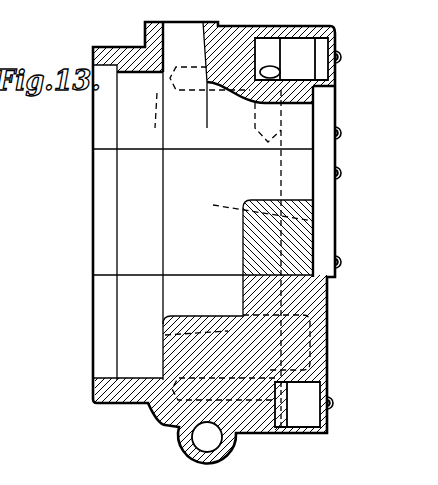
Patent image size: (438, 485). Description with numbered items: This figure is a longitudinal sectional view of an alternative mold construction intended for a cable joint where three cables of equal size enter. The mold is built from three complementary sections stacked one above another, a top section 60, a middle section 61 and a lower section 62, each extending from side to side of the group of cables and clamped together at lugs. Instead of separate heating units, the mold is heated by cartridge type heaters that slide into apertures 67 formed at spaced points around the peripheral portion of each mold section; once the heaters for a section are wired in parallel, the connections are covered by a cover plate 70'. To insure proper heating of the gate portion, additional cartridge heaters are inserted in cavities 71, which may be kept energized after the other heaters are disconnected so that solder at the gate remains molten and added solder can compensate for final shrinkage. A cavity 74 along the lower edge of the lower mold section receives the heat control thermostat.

The top section 60 is at (302, 143).
The middle section 61 is at (305, 229).
The lower section 62 is at (315, 332).
The apertures 67 is at (190, 90).
The cover plate 70' is at (320, 404).
The cavities 71 is at (272, 115).
The cavity for heat control thermostat 74 is at (219, 440).